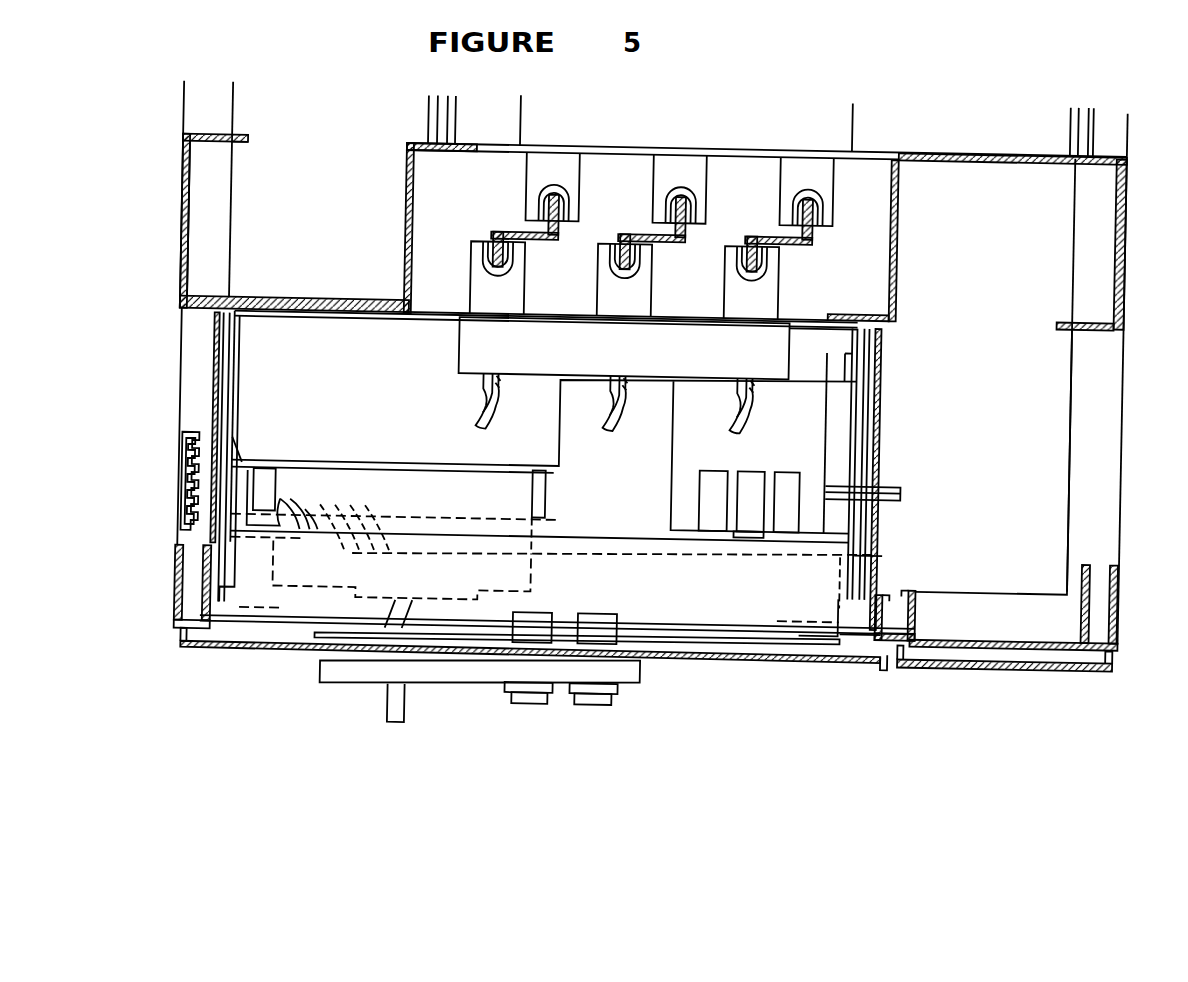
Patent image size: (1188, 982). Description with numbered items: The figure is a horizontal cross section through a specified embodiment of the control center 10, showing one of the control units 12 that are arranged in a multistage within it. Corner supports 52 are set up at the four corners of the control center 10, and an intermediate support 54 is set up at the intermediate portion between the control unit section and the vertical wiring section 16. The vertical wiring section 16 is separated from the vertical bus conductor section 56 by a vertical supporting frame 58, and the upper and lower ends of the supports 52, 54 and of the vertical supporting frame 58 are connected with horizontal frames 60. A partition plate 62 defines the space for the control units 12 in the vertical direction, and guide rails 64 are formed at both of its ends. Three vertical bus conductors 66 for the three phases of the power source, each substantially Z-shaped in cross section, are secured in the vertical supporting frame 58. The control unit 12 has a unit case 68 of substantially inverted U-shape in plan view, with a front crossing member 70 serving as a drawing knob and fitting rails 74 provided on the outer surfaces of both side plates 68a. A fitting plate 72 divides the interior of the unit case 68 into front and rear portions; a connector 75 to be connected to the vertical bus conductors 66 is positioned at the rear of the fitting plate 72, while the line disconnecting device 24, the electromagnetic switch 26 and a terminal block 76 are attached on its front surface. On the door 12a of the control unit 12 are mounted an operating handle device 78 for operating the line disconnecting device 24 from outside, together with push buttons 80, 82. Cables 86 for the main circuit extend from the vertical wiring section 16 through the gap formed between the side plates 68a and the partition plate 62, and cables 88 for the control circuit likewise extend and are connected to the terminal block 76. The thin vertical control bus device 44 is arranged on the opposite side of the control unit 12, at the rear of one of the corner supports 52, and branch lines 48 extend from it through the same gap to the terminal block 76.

The control center 10 is at (251, 652).
The control unit 12 is at (978, 129).
The door 12a is at (682, 657).
The vertical wiring section 16 is at (332, 224).
The line disconnecting device 24 is at (536, 531).
The electromagnetic switch 26 is at (673, 442).
The vertical control bus device 44 is at (182, 431).
The branch lines 48 is at (252, 498).
The corner supports 52 is at (176, 580).
The intermediate support 54 is at (912, 598).
The vertical bus conductor section 56 is at (486, 207).
The vertical supporting frame 58 is at (407, 266).
The horizontal frames 60 is at (1067, 506).
The partition plate 62 is at (826, 656).
The guide rails 64 is at (214, 350).
The vertical bus conductors 66 is at (557, 240).
The unit case 68 is at (326, 318).
The side plates 68a is at (240, 384).
The front crossing member 70 is at (756, 638).
The fitting plate 72 is at (386, 463).
The fitting rails 74 is at (223, 385).
The connector 75 is at (463, 351).
The terminal block 76 is at (546, 485).
The operating handle device 78 is at (445, 686).
The push button 80 is at (525, 704).
The push button 82 is at (590, 704).
The cables for the main circuit 86 is at (880, 487).
The cables for the control circuit 88 is at (881, 556).